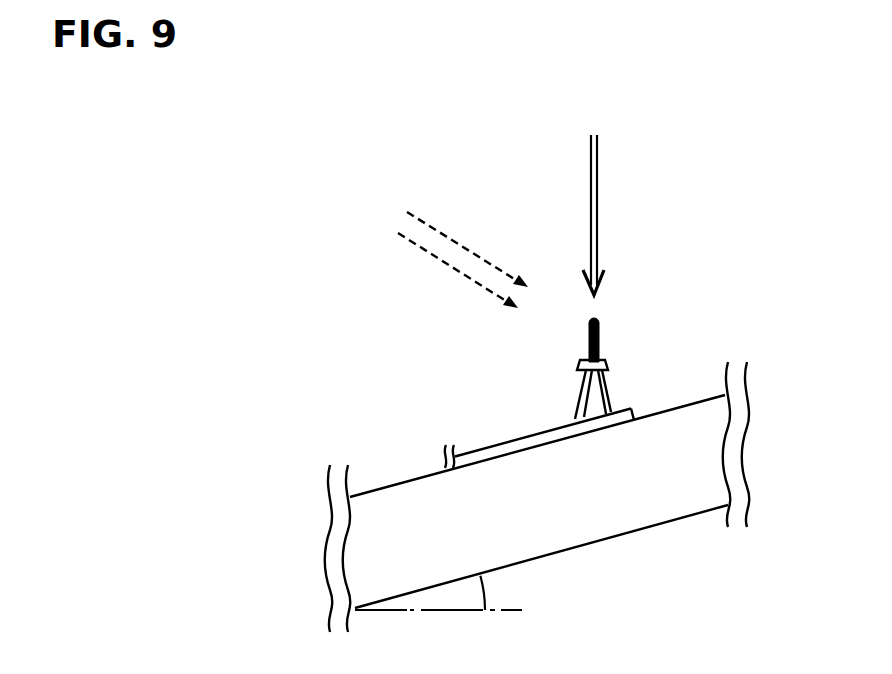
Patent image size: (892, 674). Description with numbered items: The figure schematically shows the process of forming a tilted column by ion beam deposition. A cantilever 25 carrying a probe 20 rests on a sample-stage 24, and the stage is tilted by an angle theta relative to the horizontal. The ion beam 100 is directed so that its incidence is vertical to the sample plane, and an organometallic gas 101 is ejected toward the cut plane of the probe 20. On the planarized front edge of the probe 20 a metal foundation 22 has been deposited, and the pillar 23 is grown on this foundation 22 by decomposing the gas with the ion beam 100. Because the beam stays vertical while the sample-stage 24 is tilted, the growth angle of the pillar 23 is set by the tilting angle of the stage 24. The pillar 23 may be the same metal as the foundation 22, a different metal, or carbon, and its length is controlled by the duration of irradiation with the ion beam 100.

The ion beam 100 is at (602, 208).
The organometallic gas 101 is at (468, 248).
The probe 20 is at (577, 390).
The foundation 22 is at (607, 363).
The pillar 23 is at (593, 320).
The sample-stage 24 is at (637, 518).
The cantilever 25 is at (507, 447).